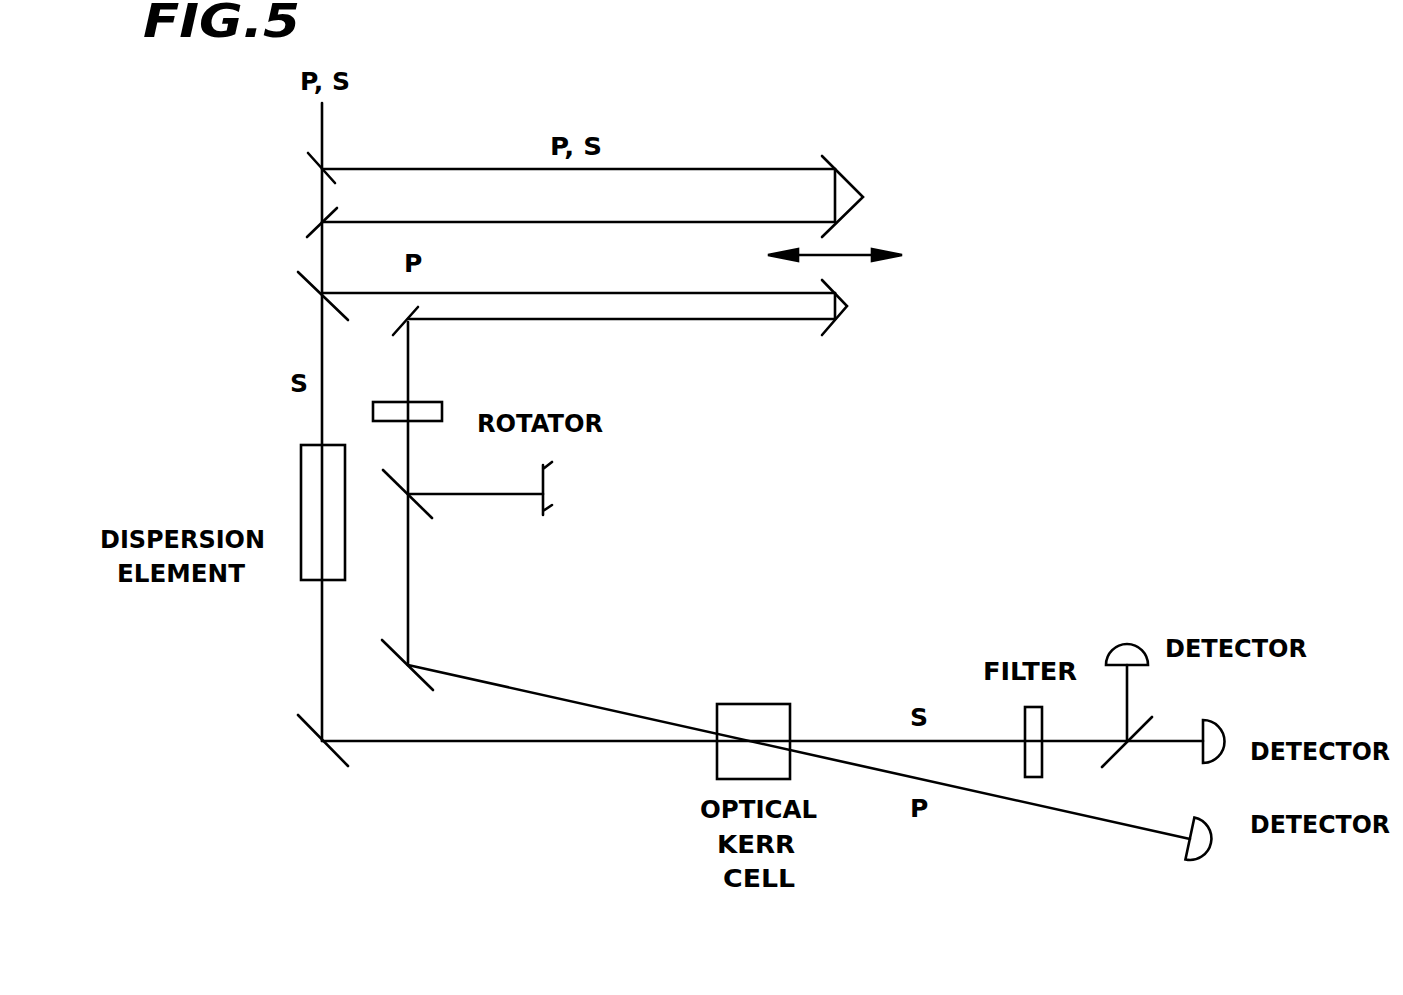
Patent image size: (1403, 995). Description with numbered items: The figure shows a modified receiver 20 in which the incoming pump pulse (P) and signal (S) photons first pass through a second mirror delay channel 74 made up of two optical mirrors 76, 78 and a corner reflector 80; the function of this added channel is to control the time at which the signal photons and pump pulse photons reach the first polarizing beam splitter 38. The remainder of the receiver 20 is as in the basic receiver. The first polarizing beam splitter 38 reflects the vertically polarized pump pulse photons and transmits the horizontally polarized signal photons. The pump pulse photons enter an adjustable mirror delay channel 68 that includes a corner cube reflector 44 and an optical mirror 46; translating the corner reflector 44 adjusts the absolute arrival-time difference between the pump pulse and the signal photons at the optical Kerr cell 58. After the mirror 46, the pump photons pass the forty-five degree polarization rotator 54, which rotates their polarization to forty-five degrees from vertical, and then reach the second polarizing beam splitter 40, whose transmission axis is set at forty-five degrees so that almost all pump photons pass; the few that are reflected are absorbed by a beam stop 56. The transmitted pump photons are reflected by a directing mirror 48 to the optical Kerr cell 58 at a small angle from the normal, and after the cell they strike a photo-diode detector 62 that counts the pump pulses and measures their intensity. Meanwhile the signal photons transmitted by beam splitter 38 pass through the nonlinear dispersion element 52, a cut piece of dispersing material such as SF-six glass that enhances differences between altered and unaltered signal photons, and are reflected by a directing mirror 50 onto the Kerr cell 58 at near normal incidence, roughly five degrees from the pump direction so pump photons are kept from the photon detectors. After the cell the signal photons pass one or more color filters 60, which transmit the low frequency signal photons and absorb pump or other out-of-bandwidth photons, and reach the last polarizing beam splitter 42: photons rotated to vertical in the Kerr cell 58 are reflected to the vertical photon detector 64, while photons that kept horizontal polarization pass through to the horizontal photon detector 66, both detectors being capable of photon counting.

The receiver 20 is at (1053, 105).
The first polarizing beam splitter 38 is at (312, 289).
The second polarizing beam splitter 40 is at (430, 519).
The last polarizing beam splitter 42 is at (1115, 757).
The corner cube reflector 44 is at (845, 312).
The optical mirror 46 is at (398, 333).
The directing mirror 48 is at (397, 655).
The directing mirror 50 is at (333, 755).
The nonlinear dispersion element 52 is at (300, 470).
The forty-five degree polarization rotator 54 is at (442, 412).
The beam stop 56 is at (552, 492).
The optical Kerr cell 58 is at (765, 704).
The color filter 60 is at (1033, 777).
The photo-diode detector 62 is at (1213, 848).
The vertical photon detector 64 is at (1140, 645).
The horizontal photon detector 66 is at (1225, 736).
The mirror delay channel 68 is at (633, 321).
The second mirror delay channel 74 is at (660, 169).
The optical mirror 76 is at (316, 168).
The optical mirror 78 is at (312, 228).
The corner reflector 80 is at (847, 177).